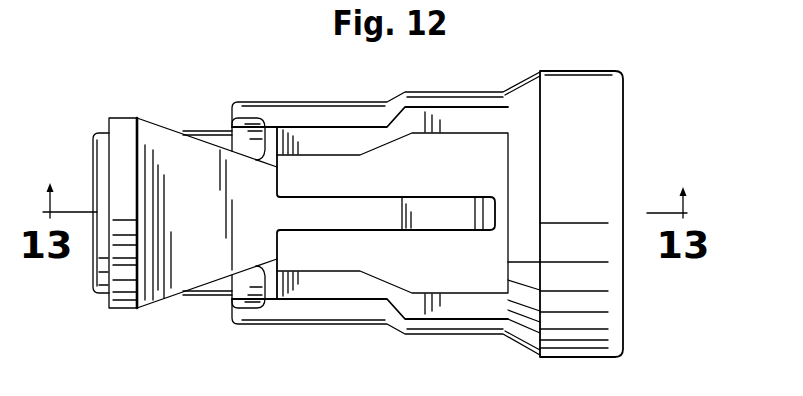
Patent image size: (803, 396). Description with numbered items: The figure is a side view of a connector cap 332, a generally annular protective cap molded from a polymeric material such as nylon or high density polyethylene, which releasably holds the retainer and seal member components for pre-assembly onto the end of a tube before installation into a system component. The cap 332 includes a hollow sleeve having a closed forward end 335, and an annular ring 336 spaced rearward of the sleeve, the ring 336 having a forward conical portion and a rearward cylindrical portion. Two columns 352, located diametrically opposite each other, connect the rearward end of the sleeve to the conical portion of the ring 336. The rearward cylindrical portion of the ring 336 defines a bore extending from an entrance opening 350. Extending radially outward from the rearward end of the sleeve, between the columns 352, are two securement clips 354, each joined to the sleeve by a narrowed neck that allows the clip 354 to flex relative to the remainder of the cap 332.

The entrance opening 350 is at (401, 220).
The securement clip 354 is at (176, 124).
The column 352 is at (322, 102).
The closed forward end 335 is at (232, 316).
The connector cap 332 is at (468, 80).
The annular ring 336 is at (614, 327).